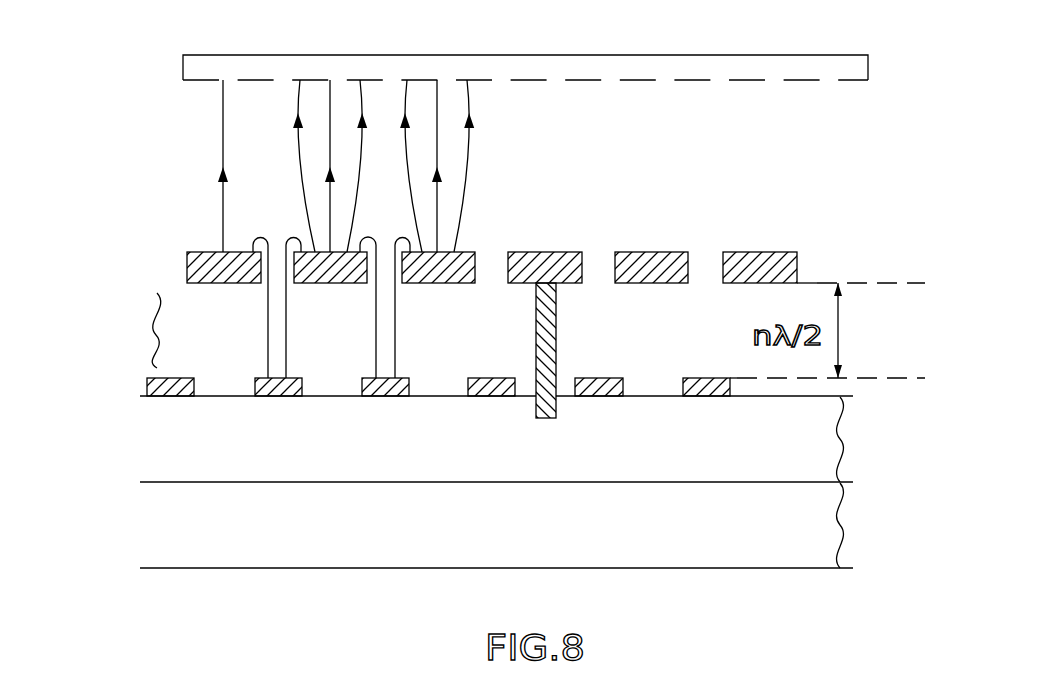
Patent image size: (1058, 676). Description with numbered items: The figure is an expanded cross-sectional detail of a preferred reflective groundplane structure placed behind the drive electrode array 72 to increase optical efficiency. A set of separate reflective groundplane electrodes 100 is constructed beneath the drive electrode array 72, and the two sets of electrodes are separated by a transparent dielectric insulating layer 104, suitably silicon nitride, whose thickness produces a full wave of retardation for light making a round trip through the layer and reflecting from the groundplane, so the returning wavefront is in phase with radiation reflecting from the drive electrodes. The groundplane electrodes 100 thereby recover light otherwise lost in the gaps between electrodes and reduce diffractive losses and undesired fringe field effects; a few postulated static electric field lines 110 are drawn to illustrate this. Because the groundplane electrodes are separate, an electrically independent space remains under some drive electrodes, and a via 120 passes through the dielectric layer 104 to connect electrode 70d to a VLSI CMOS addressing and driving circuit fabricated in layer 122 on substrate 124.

The drive electrode array 72 is at (833, 260).
The drive electrode 70d is at (552, 252).
The electric field lines 110 is at (466, 175).
The via 120 is at (556, 352).
The dielectric insulating layer 104 is at (148, 330).
The reflective groundplane electrodes 100 is at (110, 385).
The layer 122 is at (841, 438).
The substrate 124 is at (841, 524).